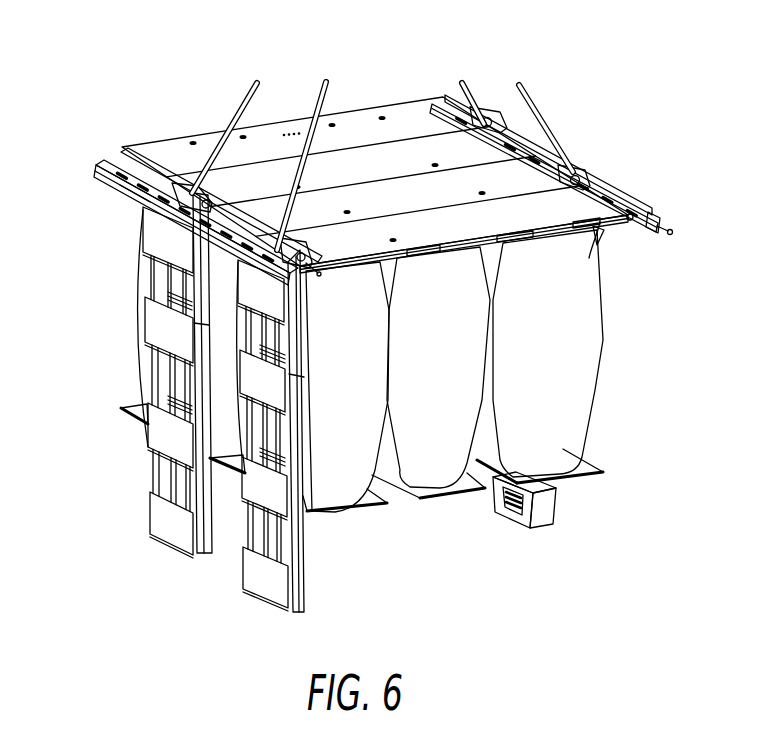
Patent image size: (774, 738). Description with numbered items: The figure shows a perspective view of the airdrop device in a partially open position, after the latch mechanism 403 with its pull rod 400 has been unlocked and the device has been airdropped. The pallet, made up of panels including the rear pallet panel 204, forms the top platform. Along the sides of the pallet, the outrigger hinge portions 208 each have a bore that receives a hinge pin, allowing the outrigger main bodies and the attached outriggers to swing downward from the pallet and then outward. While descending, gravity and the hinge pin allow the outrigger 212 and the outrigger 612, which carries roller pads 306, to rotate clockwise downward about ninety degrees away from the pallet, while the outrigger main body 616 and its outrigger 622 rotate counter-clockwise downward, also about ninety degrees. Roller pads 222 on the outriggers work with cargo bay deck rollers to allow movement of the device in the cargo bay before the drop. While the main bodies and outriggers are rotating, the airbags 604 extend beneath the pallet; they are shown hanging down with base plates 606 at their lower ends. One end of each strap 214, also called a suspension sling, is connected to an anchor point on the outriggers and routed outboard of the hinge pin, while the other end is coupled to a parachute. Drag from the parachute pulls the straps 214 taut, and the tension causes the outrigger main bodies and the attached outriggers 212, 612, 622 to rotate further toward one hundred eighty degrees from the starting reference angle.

The rear pallet panel 204 is at (406, 117).
The outrigger hinge portion 208 is at (597, 248).
The outrigger 212 is at (104, 160).
The strap 214 is at (542, 122).
The roller pad 222 is at (633, 220).
The roller pad 306 is at (153, 318).
The pull rod 400 is at (668, 228).
The latch mechanism 403 is at (126, 192).
The airbag 604 is at (596, 338).
The base plate 606 is at (593, 470).
The outrigger 612 is at (156, 470).
The outrigger main body 616 is at (625, 212).
The outrigger 622 is at (555, 512).